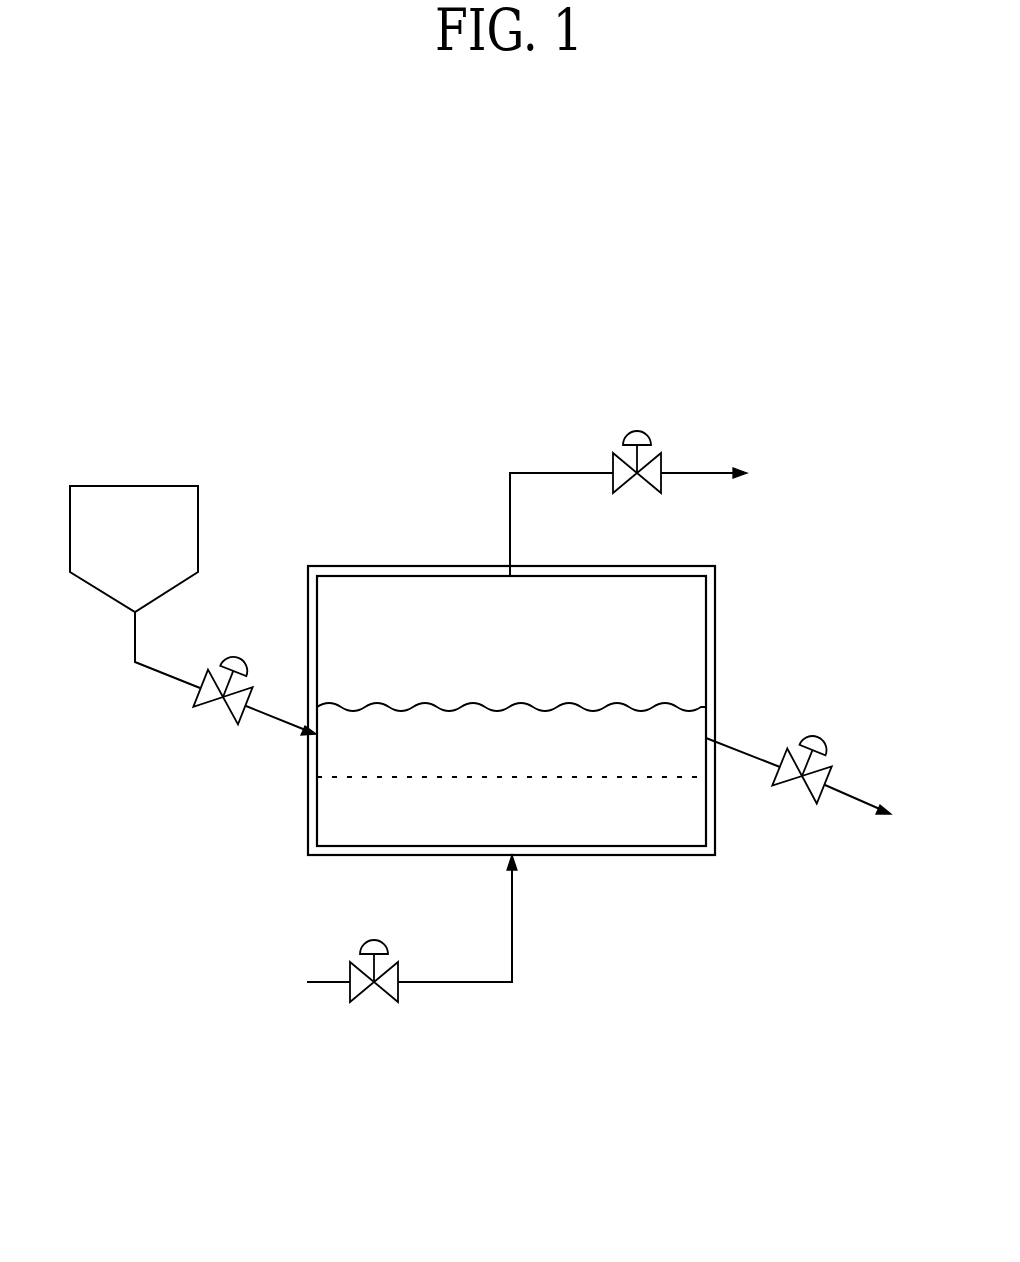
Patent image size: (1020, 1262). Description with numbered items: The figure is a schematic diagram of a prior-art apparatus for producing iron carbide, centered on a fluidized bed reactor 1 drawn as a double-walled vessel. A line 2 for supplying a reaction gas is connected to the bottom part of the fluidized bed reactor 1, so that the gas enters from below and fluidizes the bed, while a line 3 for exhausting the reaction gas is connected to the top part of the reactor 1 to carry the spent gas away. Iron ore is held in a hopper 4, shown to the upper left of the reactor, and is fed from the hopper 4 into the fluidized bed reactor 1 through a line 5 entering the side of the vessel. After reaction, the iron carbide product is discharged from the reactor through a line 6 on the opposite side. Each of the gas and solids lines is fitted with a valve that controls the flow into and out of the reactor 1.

The fluidized bed reactor 1 is at (425, 567).
The line for supplying a reaction gas 2 is at (443, 983).
The line for exhausting the reaction gas 3 is at (692, 470).
The hopper 4 is at (155, 484).
The line 5 is at (170, 678).
The line 6 is at (743, 757).